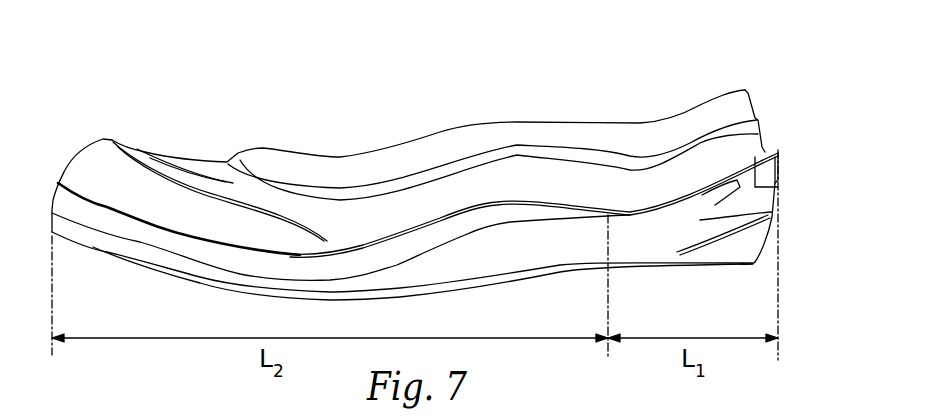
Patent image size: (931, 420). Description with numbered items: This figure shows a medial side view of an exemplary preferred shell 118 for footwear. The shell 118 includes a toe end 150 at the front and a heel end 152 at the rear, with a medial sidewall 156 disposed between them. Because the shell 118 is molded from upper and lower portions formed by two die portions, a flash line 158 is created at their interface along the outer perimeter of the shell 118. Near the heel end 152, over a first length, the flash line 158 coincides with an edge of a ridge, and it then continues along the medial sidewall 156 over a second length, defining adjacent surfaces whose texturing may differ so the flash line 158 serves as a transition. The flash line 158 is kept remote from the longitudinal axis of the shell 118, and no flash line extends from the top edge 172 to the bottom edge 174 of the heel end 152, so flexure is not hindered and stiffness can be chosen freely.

The shell 118 is at (317, 106).
The toe end 150 is at (65, 170).
The heel end 152 is at (762, 148).
The medial sidewall 156 is at (445, 192).
The flash line 158 is at (510, 222).
The top edge 172 is at (745, 90).
The bottom edge 174 is at (768, 266).